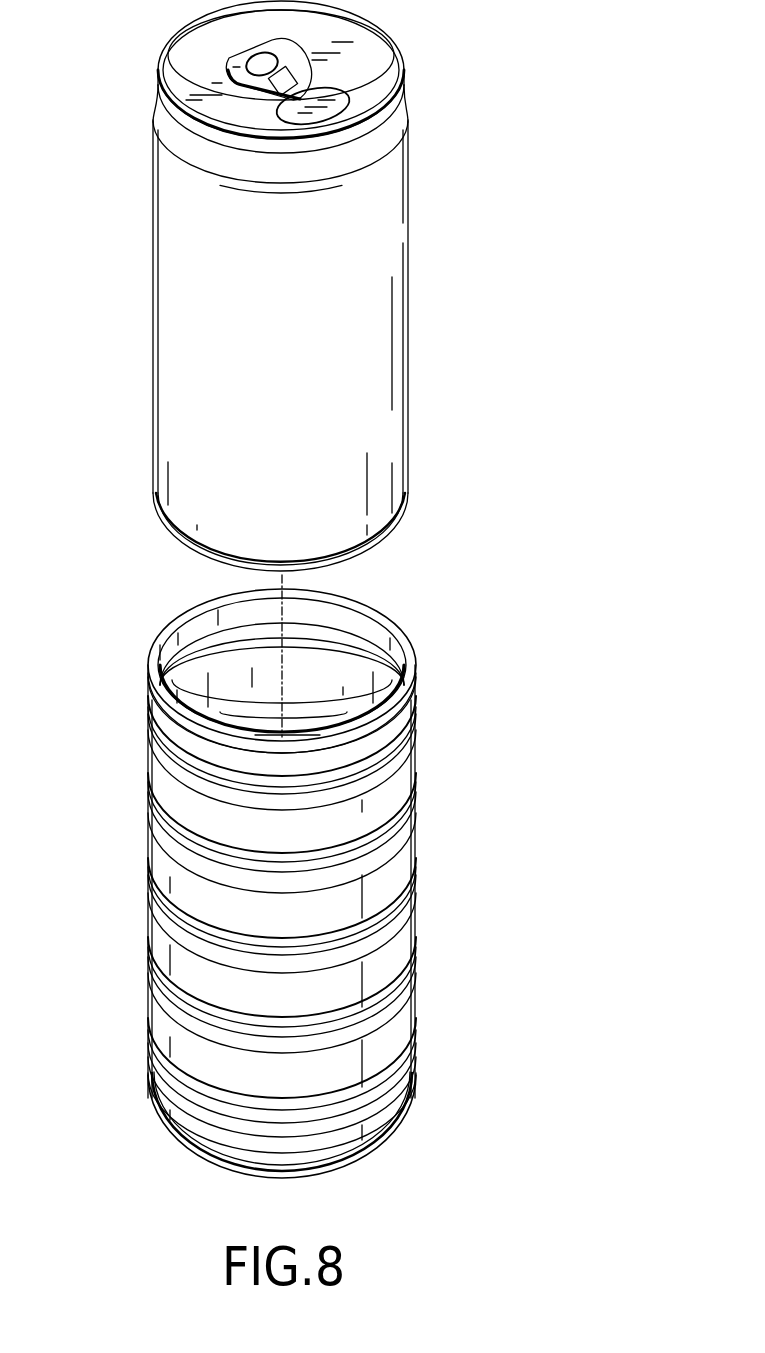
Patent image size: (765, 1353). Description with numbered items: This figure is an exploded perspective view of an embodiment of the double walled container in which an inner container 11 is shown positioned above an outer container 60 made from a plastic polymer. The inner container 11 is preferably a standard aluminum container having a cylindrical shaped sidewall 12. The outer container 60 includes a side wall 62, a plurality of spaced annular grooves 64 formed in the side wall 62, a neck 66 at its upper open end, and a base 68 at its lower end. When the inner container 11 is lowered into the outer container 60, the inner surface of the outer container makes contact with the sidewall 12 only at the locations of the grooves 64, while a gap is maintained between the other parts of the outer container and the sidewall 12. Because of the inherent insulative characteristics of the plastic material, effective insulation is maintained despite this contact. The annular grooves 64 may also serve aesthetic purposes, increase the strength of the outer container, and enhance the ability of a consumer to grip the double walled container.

The inner container 11 is at (355, 286).
The sidewall 12 is at (280, 333).
The outer container 60 is at (320, 913).
The side wall 62 is at (408, 775).
The annular grooves 64 is at (397, 740).
The neck 66 is at (155, 680).
The base 68 is at (392, 1176).